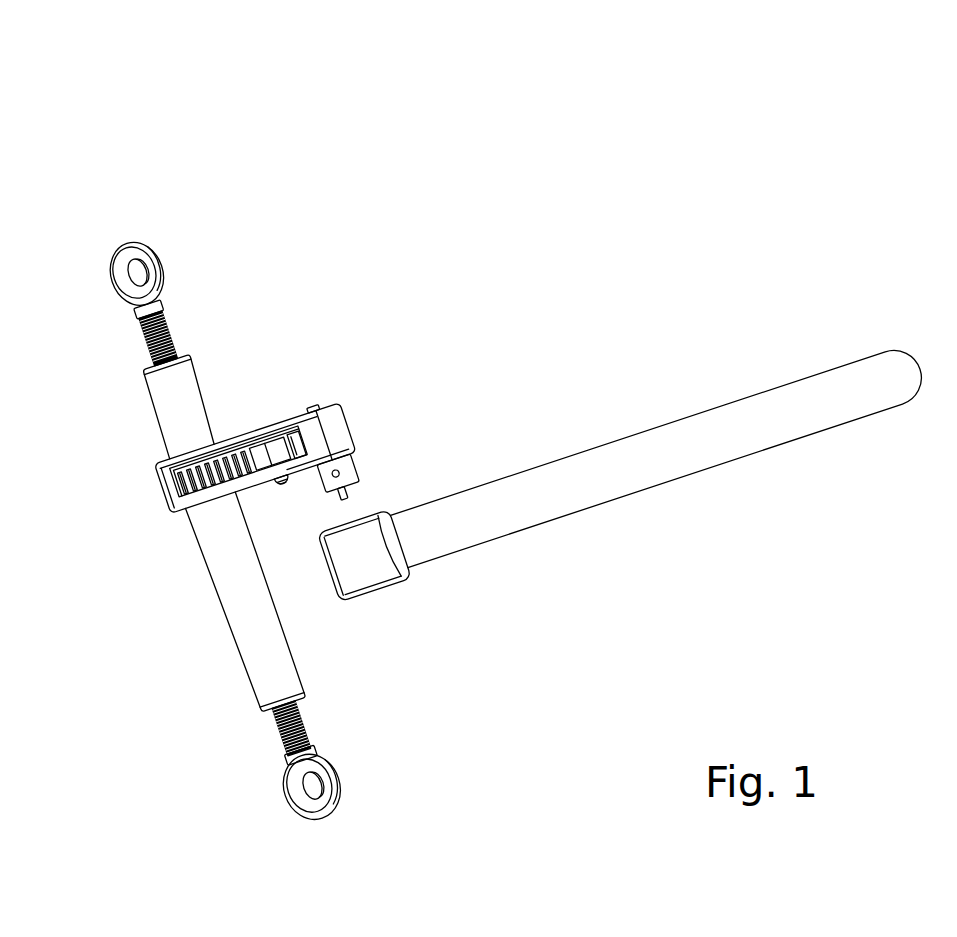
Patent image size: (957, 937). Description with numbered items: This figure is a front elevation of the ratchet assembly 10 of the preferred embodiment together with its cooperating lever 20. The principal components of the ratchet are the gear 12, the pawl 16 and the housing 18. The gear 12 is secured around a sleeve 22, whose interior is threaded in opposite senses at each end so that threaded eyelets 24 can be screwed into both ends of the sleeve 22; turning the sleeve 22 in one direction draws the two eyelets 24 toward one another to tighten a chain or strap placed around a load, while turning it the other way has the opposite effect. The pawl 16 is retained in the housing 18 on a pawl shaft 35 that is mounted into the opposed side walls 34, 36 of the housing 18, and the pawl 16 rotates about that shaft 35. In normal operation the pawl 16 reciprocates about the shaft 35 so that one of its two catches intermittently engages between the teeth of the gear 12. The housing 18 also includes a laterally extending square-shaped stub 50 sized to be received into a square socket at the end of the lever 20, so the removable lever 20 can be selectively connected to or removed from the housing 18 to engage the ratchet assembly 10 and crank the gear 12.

The ratchet assembly 10 is at (537, 268).
The gear 12 is at (158, 462).
The pawl 16 is at (264, 453).
The housing 18 is at (335, 430).
The lever 20 is at (483, 525).
The sleeve 22 is at (233, 627).
The threaded eyelets 24 is at (145, 337).
The side wall 34 is at (308, 475).
The pawl shaft 35 is at (287, 490).
The side wall 36 is at (298, 430).
The stub 50 is at (353, 482).